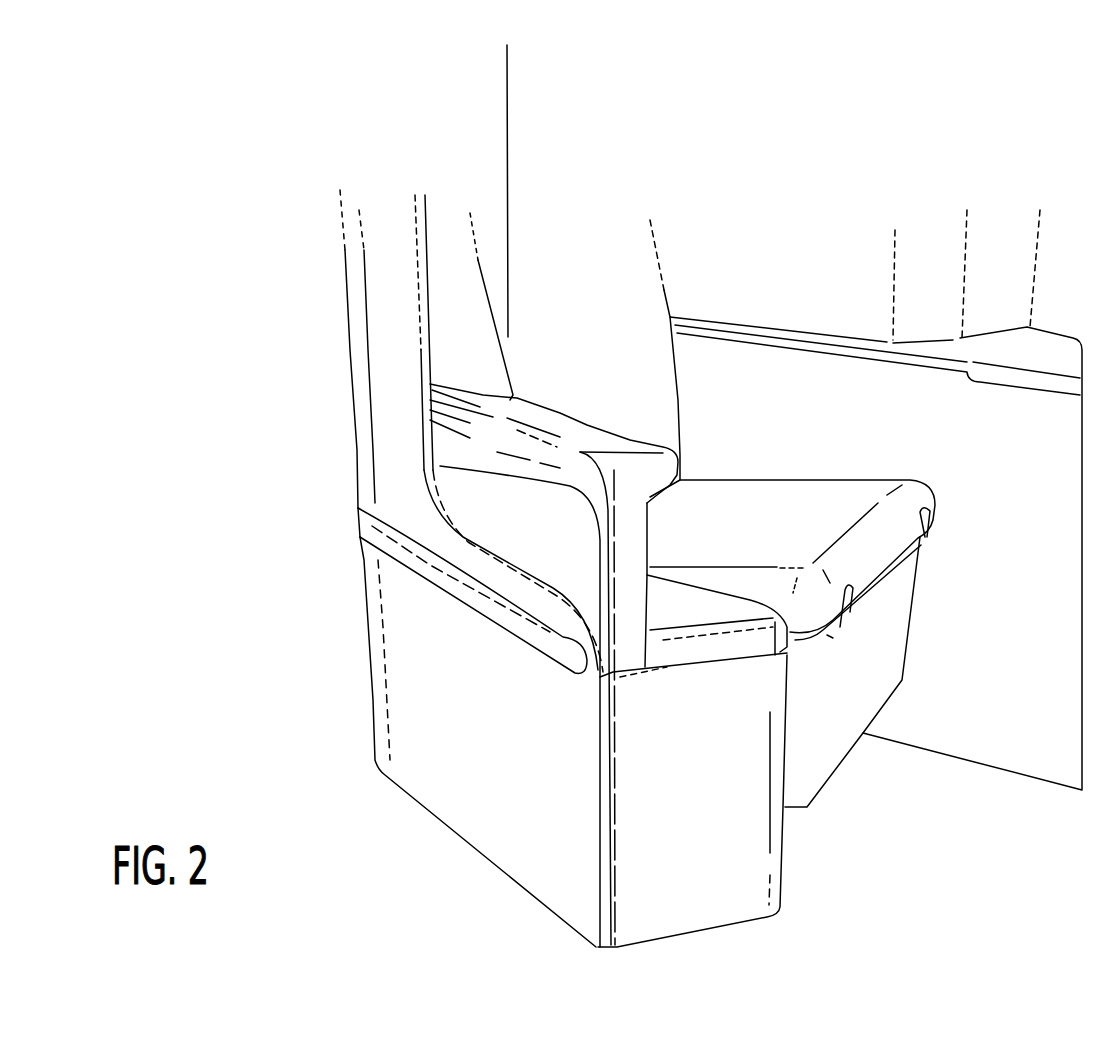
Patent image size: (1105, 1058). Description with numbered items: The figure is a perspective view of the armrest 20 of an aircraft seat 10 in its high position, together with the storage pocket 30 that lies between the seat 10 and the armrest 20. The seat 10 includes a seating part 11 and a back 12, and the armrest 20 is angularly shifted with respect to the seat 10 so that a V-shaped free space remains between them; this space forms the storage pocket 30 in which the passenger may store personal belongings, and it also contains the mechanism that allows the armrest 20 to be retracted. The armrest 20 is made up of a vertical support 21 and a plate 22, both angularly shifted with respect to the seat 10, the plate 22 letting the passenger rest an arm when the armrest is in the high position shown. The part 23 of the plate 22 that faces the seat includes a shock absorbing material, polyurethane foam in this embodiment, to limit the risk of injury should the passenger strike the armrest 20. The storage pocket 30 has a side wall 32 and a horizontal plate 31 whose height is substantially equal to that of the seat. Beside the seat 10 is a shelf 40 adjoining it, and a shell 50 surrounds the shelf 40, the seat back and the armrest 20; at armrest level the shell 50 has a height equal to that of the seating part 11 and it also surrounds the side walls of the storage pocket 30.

The aircraft seat 10 is at (598, 284).
The seating part 11 is at (812, 500).
The back 12 is at (527, 270).
The armrest 20 is at (456, 470).
The vertical support 21 is at (503, 532).
The plate 22 is at (483, 396).
The part of the plate facing the seat 23 is at (645, 447).
The storage pocket 30 is at (672, 665).
The horizontal plate 31 is at (713, 607).
The side wall 32 is at (683, 823).
The shelf 40 is at (835, 297).
The shell 50 is at (375, 315).